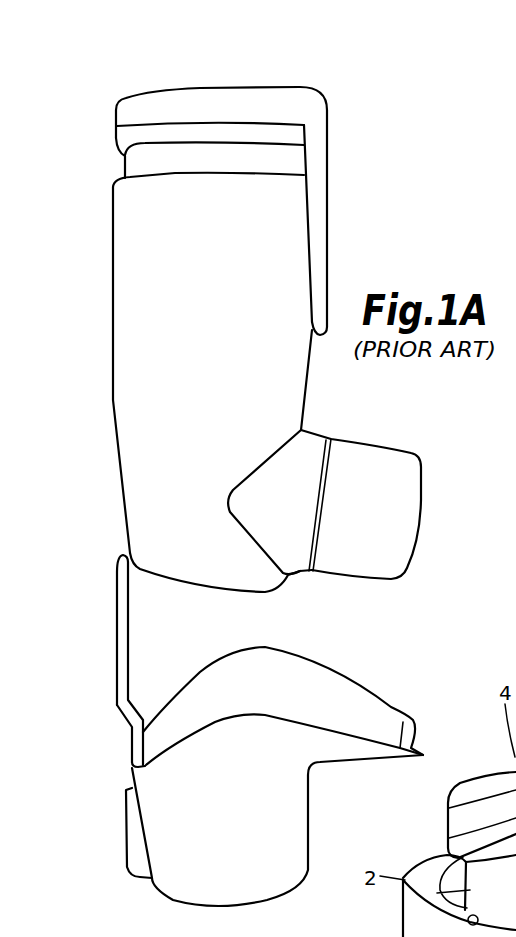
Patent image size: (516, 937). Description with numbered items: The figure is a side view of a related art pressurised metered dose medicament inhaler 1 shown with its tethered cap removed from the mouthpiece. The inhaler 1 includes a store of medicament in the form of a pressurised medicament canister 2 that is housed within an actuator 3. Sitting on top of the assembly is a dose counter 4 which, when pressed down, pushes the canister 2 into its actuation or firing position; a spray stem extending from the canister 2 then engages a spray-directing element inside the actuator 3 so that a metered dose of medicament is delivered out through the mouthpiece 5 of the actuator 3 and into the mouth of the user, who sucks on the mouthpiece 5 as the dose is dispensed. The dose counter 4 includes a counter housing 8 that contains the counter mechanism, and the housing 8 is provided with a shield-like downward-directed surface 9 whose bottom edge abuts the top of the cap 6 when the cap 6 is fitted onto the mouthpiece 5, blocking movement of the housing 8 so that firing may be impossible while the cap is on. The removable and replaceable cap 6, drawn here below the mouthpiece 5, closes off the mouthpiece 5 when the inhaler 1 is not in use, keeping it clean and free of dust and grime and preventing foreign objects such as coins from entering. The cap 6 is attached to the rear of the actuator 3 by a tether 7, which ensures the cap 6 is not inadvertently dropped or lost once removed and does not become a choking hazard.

The medicament inhaler 1 is at (454, 441).
The pressurised medicament canister 2 is at (127, 167).
The actuator 3 is at (115, 365).
The dose counter 4 is at (137, 98).
The mouthpiece 5 is at (421, 510).
The cap 6 is at (383, 692).
The tether 7 is at (118, 664).
The counter housing 8 is at (256, 78).
The shield-like downward-directed surface 9 is at (320, 228).